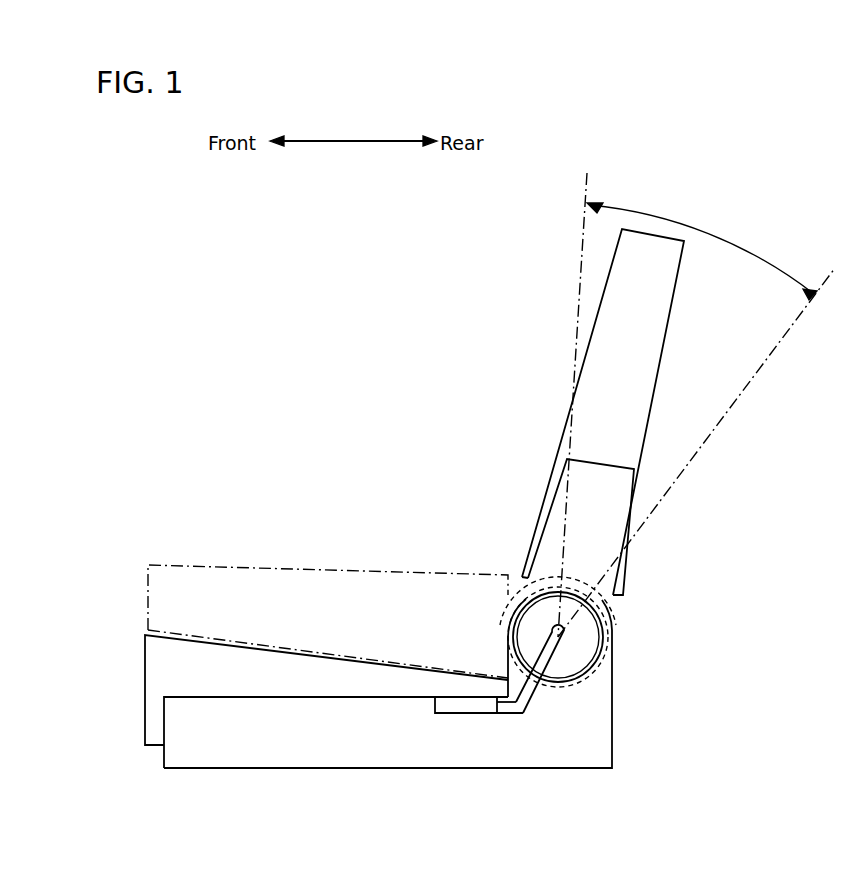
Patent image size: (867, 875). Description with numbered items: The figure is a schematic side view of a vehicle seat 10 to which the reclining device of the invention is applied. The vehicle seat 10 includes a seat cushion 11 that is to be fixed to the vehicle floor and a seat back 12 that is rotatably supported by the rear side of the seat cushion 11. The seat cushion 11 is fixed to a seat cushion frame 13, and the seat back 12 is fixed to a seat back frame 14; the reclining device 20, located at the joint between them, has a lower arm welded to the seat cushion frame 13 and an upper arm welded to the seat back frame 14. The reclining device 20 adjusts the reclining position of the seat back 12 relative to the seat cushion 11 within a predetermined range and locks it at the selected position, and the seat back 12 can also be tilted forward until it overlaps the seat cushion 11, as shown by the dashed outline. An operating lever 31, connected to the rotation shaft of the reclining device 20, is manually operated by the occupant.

The vehicle seat 10 is at (373, 361).
The seat cushion 11 is at (145, 683).
The seat back 12 is at (663, 330).
The seat cushion frame 13 is at (369, 768).
The seat back frame 14 is at (615, 514).
The vehicle seat reclining device 20 is at (602, 654).
The operating lever 31 is at (536, 690).